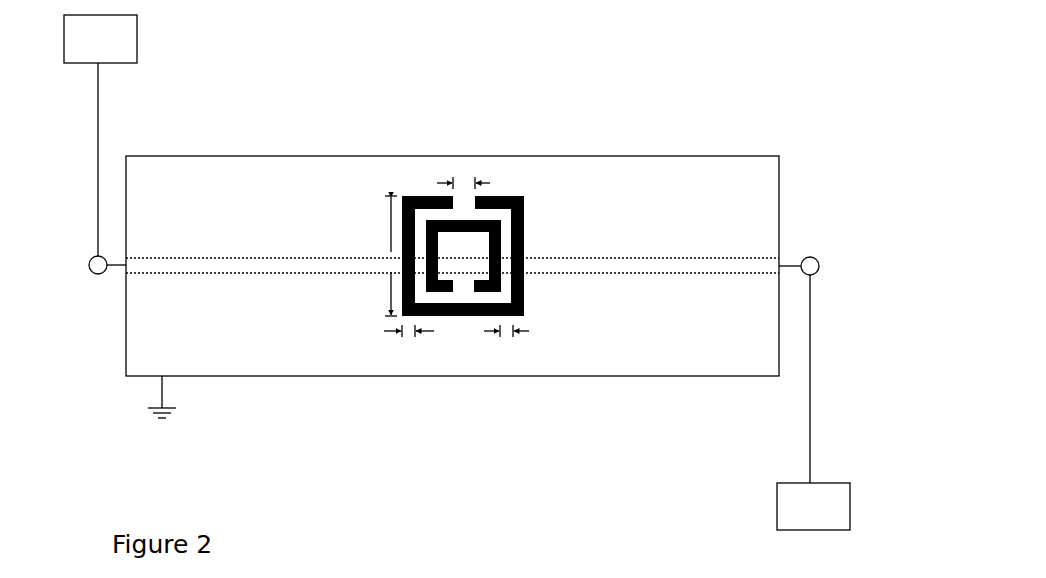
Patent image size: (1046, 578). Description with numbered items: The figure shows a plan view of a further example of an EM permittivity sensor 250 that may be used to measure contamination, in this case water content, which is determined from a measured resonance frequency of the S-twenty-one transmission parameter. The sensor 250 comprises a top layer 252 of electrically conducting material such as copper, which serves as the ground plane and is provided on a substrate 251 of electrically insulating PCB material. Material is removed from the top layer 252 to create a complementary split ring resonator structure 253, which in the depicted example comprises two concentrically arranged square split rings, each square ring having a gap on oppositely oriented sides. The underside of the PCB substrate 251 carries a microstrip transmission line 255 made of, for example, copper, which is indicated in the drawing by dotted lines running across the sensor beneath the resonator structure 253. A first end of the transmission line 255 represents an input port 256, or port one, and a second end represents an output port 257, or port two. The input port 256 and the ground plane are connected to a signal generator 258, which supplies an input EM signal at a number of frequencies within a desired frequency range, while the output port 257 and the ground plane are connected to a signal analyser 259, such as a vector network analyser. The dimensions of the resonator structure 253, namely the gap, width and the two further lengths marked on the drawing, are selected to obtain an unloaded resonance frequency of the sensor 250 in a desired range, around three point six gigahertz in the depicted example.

The sensor 250 is at (311, 132).
The substrate 251 is at (509, 195).
The top layer 252 is at (254, 333).
The split ring resonator structure 253 is at (462, 337).
The microstrip transmission line 255 is at (588, 258).
The input port 256 is at (89, 265).
The output port 257 is at (819, 264).
The signal generator 258 is at (100, 135).
The signal analyser 259 is at (813, 402).